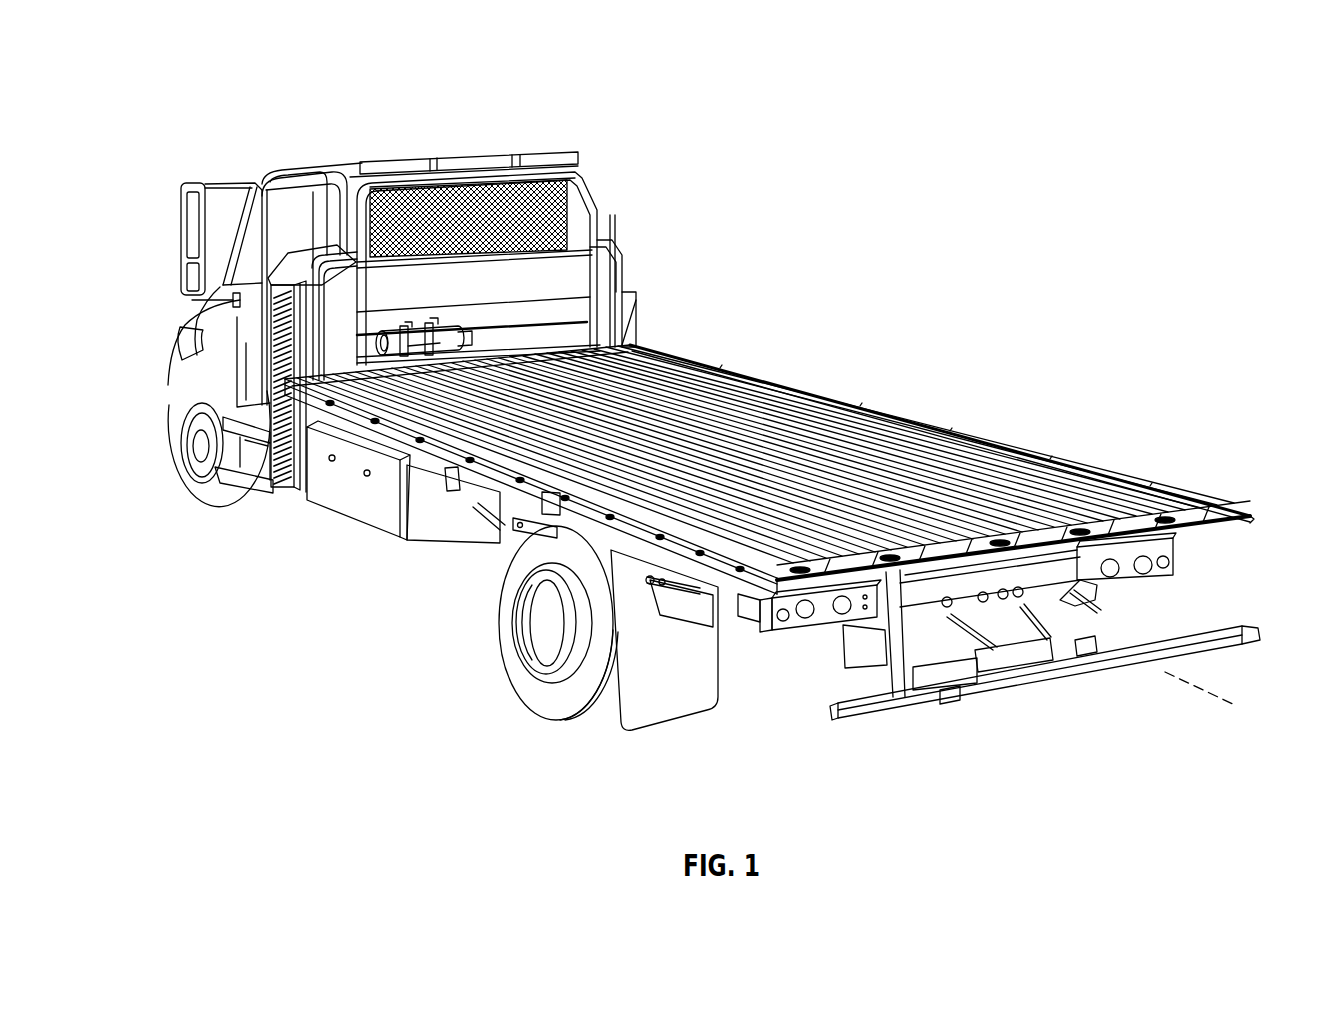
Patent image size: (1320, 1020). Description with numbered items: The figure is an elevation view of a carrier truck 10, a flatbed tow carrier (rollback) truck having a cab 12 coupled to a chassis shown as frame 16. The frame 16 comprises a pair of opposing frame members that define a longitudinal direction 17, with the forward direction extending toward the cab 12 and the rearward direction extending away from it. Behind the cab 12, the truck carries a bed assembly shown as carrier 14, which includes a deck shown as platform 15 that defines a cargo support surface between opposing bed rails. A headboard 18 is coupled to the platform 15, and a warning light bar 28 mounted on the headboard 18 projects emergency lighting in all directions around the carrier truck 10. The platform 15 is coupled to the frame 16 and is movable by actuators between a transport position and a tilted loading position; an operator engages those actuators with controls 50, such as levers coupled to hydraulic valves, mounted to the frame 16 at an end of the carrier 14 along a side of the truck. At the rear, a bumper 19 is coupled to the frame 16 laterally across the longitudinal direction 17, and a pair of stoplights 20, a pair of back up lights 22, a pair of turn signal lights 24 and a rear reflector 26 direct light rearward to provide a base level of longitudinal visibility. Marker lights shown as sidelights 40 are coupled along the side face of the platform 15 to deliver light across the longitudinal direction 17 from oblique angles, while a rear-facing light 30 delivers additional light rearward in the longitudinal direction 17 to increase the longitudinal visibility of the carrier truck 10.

The carrier truck 10 is at (866, 337).
The cab 12 is at (290, 172).
The carrier 14 is at (906, 443).
The platform 15 is at (1075, 482).
The frame 16 is at (955, 698).
The longitudinal direction 17 is at (1215, 698).
The headboard 18 is at (588, 200).
The bumper 19 is at (788, 625).
The stoplights 20 is at (1147, 570).
The back up lights 22 is at (1113, 572).
The turn signal lights 24 is at (1174, 568).
The rear reflector 26 is at (866, 716).
The warning light bar 28 is at (562, 155).
The rear-facing light 30 is at (455, 487).
The sidelights 40 is at (287, 494).
The controls 50 is at (648, 594).